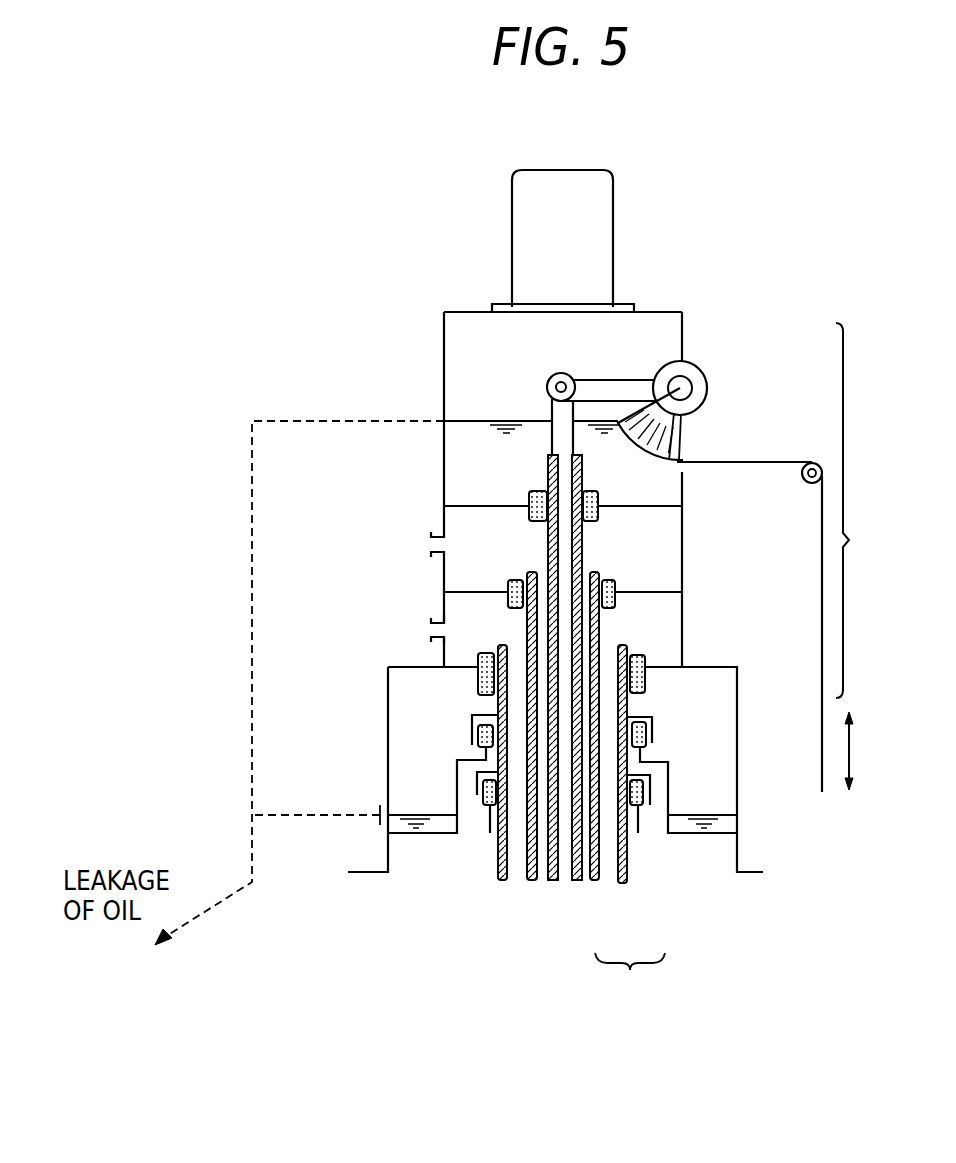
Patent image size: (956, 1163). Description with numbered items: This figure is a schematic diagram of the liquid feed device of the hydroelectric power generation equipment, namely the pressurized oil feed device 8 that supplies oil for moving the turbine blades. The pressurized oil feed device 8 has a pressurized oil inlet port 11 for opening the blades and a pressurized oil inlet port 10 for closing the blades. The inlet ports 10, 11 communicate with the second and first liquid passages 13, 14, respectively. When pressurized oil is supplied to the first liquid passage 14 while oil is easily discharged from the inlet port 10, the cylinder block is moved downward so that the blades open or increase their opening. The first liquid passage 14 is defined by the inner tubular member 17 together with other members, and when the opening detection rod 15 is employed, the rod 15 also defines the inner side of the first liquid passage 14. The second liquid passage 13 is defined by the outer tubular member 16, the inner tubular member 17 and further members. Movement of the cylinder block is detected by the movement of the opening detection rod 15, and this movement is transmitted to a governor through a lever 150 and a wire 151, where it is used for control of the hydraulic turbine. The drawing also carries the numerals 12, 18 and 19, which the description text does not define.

The pressurized oil feed device 8 is at (855, 556).
The pressurized oil inlet port 10 is at (432, 626).
The pressurized oil inlet port 11 is at (432, 546).
The cylinder assembly 12 is at (630, 975).
The second liquid passage 13 is at (608, 863).
The first liquid passage 14 is at (585, 863).
The opening detection rod 15 is at (577, 880).
The outer tubular member 16 is at (628, 702).
The inner tubular member 17 is at (597, 645).
The hatched guide tube 18 is at (582, 636).
The motor 19 is at (602, 208).
The lever 150 is at (673, 437).
The wire 151 is at (781, 460).